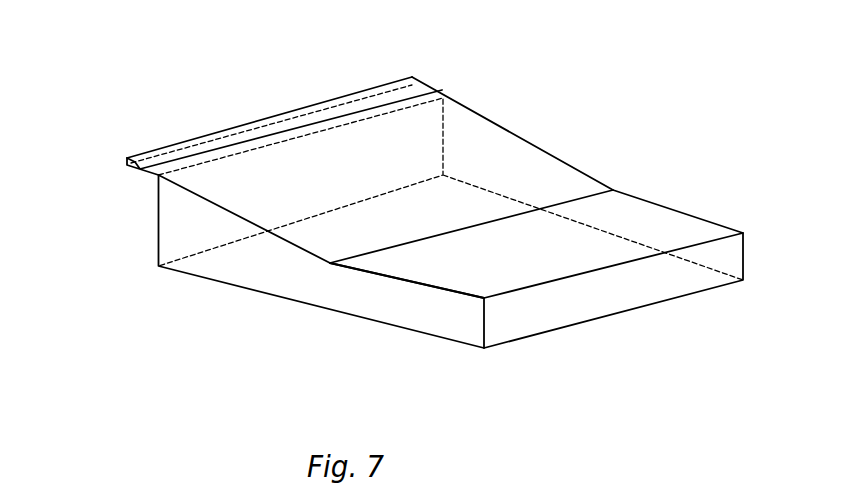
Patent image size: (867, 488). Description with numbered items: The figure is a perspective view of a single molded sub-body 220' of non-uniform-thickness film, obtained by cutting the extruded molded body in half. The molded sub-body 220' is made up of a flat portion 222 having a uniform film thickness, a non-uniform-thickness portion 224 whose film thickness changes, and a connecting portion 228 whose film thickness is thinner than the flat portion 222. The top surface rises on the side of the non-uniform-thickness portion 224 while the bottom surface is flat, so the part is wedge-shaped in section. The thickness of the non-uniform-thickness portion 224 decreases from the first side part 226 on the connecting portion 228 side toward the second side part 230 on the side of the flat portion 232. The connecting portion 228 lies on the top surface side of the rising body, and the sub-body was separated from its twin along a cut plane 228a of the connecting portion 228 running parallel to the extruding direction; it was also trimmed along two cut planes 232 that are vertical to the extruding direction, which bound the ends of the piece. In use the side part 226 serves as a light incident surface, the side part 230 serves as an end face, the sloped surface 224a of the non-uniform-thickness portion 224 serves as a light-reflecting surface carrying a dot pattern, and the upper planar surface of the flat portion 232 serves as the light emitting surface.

The molded sub-body 220' is at (401, 211).
The flat portion 222 is at (482, 358).
The non-uniform-thickness portion 224 is at (307, 313).
The sloped surface 224a is at (523, 155).
The first side part 226 is at (172, 197).
The connecting portion 228 is at (128, 166).
The cut plane 228a is at (257, 125).
The second side part 230 is at (537, 317).
The cut plane 232 is at (332, 295).